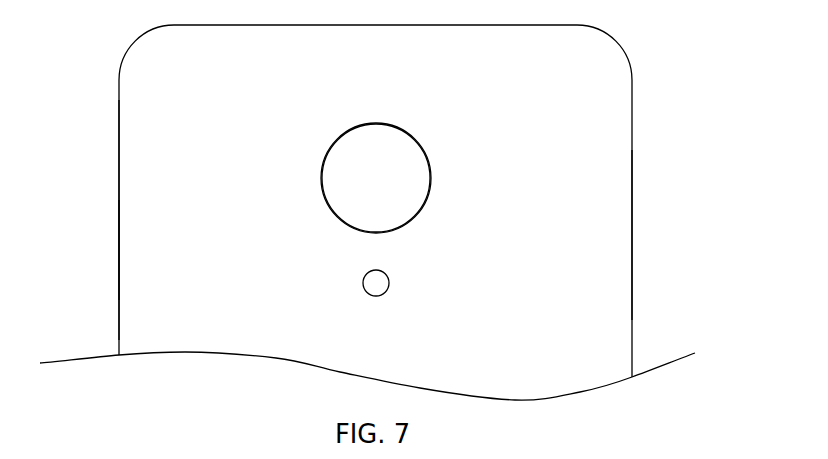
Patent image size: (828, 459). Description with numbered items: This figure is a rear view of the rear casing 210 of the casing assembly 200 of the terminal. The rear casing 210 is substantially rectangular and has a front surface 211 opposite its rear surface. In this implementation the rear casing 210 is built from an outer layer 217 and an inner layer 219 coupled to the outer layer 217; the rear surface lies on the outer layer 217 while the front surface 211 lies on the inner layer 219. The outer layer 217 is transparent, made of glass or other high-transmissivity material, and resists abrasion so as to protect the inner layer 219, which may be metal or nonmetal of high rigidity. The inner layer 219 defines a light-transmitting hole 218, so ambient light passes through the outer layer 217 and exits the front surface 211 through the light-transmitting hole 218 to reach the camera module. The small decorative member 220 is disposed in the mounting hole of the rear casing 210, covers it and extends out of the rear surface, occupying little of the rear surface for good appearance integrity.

The casing assembly 200 is at (107, 70).
The rear casing 210 is at (167, 175).
The front surface 211 is at (155, 243).
The outer layer 217 is at (408, 192).
The light-transmitting hole 218 is at (408, 153).
The inner layer 219 is at (607, 238).
The decorative member 220 is at (372, 282).